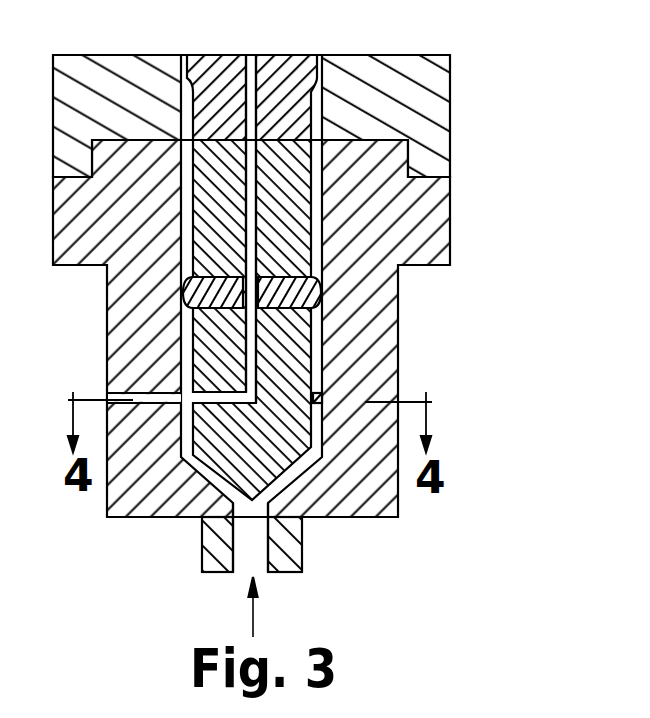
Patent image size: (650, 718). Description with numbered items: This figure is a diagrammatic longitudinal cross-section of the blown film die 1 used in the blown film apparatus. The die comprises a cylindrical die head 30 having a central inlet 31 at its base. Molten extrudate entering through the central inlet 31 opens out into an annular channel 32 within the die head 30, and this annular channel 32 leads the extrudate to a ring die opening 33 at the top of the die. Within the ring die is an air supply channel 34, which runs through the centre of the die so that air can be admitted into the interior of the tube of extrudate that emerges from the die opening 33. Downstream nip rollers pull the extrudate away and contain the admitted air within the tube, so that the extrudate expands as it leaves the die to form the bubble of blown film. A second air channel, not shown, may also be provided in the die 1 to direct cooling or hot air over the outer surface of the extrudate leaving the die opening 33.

The blown film die 1 is at (302, 324).
The cylindrical die head 30 is at (450, 190).
The central inlet 31 is at (253, 557).
The annular channel 32 is at (311, 437).
The ring die opening 33 is at (286, 288).
The air supply channel 34 is at (242, 66).